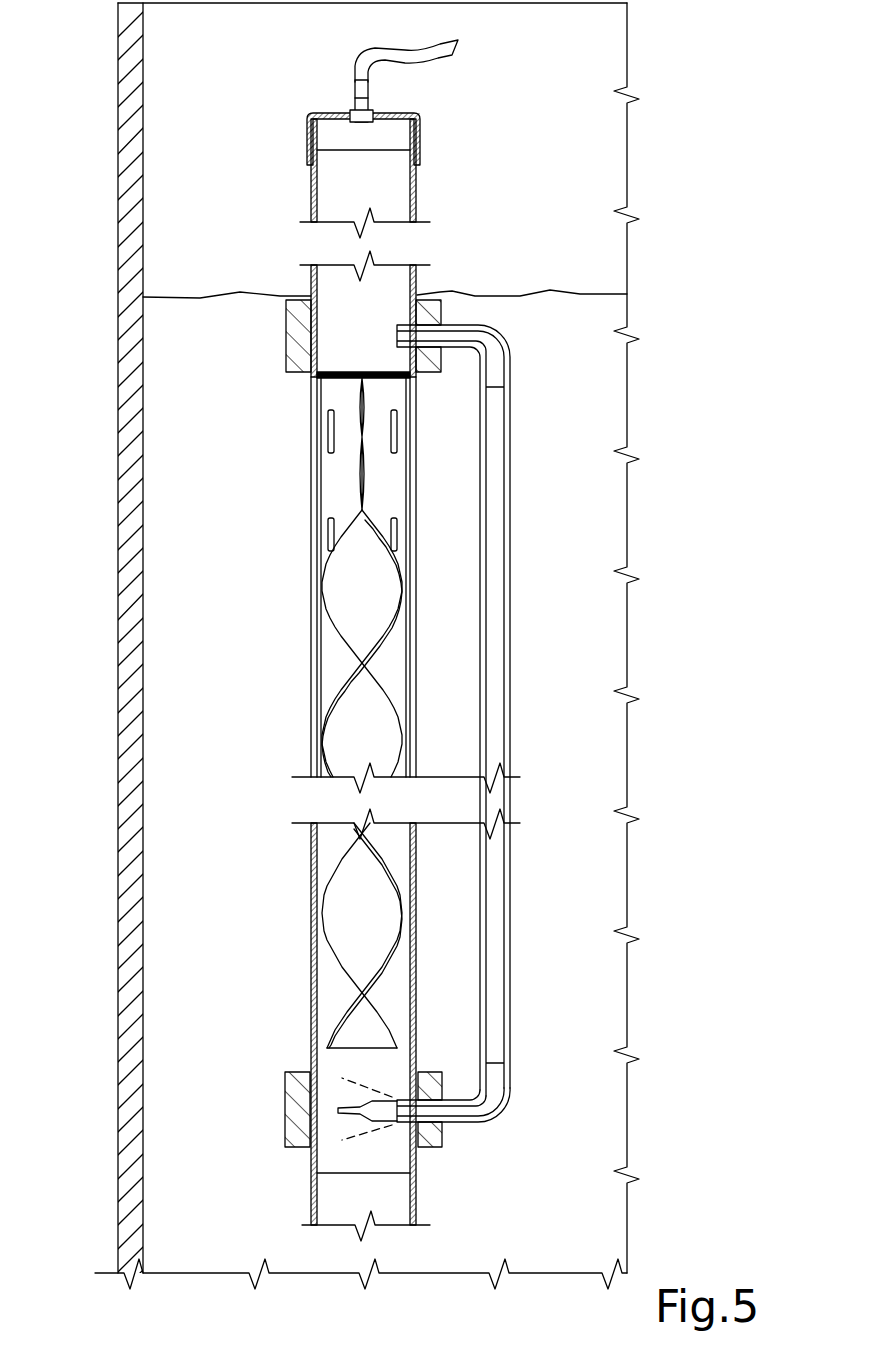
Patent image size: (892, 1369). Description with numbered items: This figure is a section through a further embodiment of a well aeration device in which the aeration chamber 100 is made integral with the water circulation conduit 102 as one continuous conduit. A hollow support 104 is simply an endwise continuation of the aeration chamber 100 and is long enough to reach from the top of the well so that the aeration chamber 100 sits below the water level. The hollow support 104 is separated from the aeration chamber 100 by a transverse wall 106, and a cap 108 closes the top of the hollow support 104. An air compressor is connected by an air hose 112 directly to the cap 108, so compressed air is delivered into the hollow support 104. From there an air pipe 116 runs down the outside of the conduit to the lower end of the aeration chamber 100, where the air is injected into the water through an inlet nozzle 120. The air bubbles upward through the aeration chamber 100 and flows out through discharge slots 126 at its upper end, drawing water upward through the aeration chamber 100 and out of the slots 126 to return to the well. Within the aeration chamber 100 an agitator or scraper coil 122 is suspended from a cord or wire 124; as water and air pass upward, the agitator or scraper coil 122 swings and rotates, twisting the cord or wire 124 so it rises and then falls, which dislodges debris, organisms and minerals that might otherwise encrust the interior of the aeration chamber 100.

The aeration chamber 100 is at (247, 711).
The water circulation conduit 102 is at (415, 1213).
The hollow support 104 is at (311, 197).
The transverse wall 106 is at (358, 372).
The cap 108 is at (405, 113).
The air hose 112 is at (357, 90).
The air pipe 116 is at (507, 512).
The inlet nozzle 120 is at (474, 1112).
The agitator or scraper coil 122 is at (367, 925).
The cord or wire 124 is at (360, 483).
The discharge slots 126 is at (392, 442).